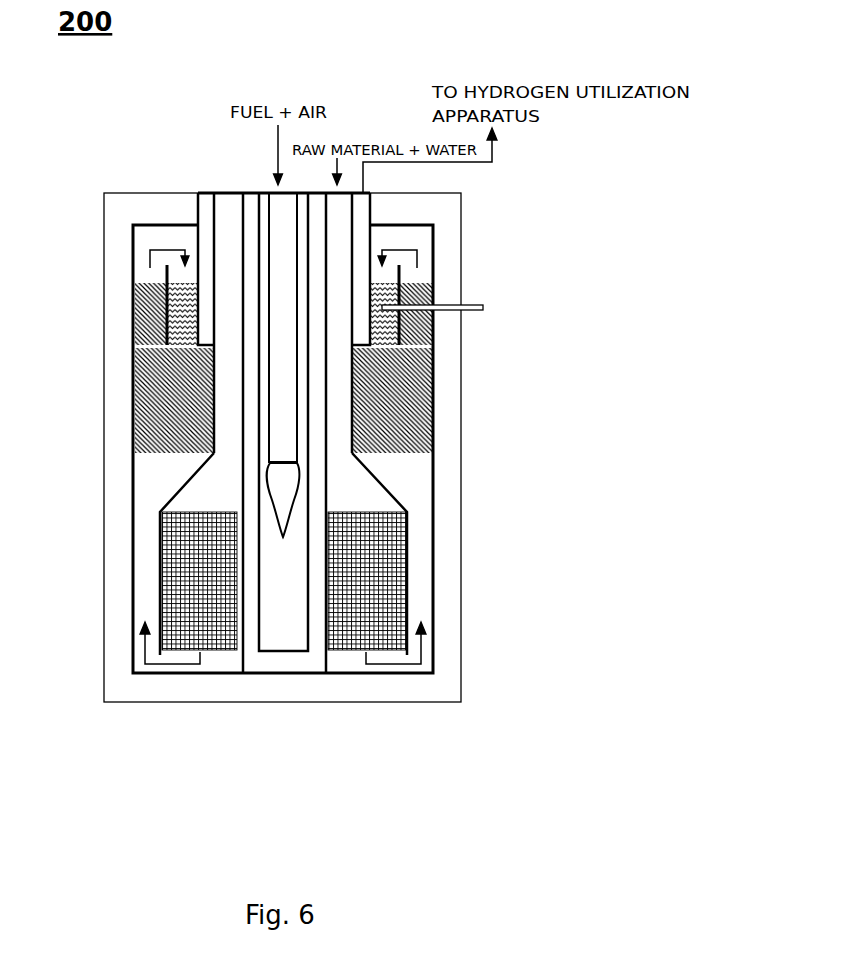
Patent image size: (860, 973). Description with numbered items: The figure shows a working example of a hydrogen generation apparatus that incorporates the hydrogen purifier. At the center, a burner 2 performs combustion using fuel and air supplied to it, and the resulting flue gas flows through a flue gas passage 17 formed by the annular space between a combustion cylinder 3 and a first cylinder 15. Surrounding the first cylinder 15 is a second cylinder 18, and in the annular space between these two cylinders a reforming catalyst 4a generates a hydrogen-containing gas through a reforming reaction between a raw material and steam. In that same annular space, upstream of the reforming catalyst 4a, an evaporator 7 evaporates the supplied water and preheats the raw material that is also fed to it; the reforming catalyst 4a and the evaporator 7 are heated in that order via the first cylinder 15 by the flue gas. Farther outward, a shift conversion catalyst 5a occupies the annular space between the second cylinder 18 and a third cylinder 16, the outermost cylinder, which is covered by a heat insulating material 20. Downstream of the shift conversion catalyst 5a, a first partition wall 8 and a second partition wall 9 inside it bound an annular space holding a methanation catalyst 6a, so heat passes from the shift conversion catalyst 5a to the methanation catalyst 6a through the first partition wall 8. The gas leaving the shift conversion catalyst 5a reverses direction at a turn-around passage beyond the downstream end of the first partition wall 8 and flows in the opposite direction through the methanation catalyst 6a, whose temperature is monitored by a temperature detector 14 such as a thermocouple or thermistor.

The heat insulating material 20 is at (120, 213).
The burner 2 is at (282, 415).
The combustion cylinder 3 is at (310, 598).
The reforming catalyst 4a is at (187, 583).
The shift conversion catalyst 5a is at (158, 415).
The methanation catalyst 6a is at (163, 327).
The evaporator 7 is at (222, 368).
The first partition wall 8 is at (167, 297).
The second partition wall 9 is at (383, 287).
The temperature detector 14 is at (477, 312).
The first cylinder 15 is at (240, 470).
The third cylinder 16 is at (127, 647).
The flue gas passage 17 is at (315, 472).
The second cylinder 18 is at (400, 500).